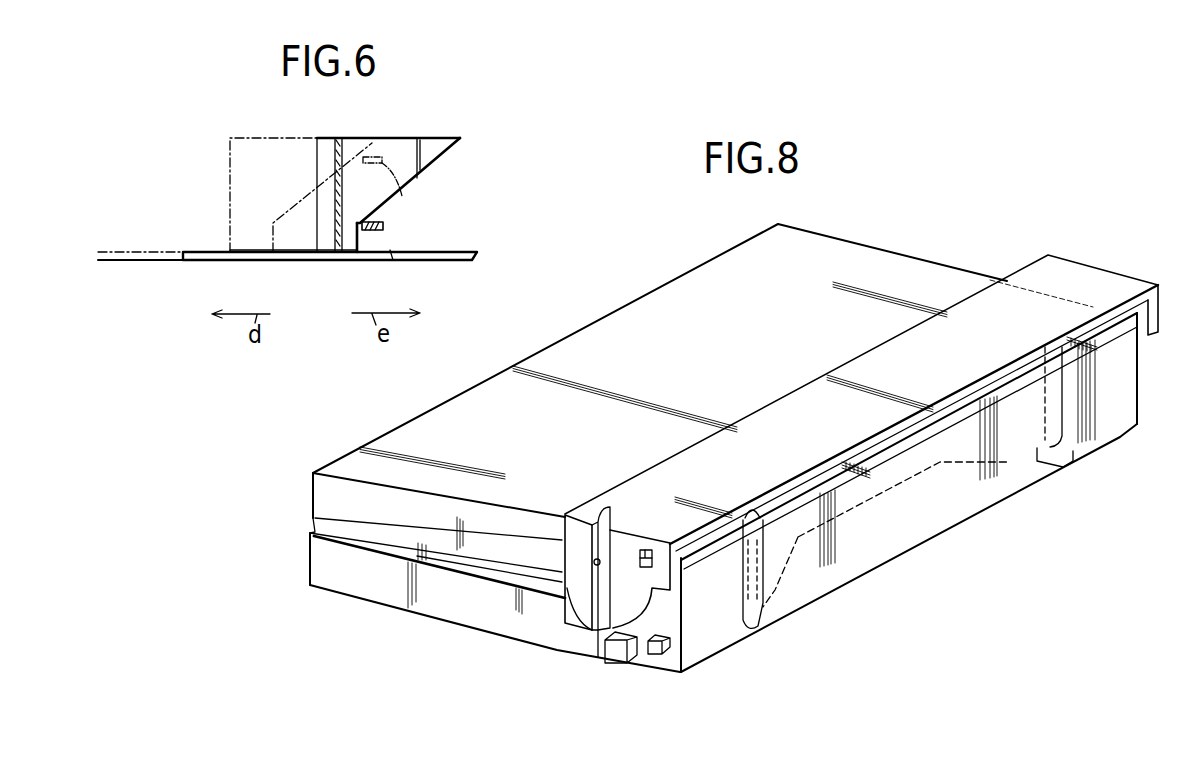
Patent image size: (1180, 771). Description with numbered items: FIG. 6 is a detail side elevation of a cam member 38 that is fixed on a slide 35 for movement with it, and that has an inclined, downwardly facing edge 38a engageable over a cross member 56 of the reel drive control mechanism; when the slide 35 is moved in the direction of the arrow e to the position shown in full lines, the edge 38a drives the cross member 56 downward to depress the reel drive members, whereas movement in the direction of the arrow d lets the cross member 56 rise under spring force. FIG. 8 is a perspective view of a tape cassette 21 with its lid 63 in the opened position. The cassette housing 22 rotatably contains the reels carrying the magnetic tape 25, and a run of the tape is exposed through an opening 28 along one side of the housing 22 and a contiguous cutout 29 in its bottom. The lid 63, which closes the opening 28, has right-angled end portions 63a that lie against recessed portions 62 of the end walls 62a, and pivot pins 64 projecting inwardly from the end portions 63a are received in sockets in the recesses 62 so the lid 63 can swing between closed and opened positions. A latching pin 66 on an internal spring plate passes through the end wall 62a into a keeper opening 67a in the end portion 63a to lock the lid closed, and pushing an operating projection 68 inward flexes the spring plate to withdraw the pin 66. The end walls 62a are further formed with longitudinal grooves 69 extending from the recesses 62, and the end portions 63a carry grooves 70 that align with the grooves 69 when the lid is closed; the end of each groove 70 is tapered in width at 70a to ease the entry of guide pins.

In FIG. 8, the tape cassette 21 is at (862, 228).
In FIG. 8, the housing 22 is at (966, 510).
In FIG. 8, the magnetic tape 25 is at (877, 532).
In FIG. 8, the opening 28 is at (745, 618).
In FIG. 8, the opening or cutout 29 is at (798, 540).
In FIG. 6, the slide 35 is at (363, 253).
In FIG. 6, the cam member 38 is at (312, 140).
In FIG. 6, the inclined downwardly facing edge 38a is at (423, 173).
In FIG. 6, the cross member 56 is at (382, 227).
In FIG. 8, the recessed portions 62 is at (665, 625).
In FIG. 8, the end walls 62a is at (467, 612).
In FIG. 8, the lid 63 is at (787, 417).
In FIG. 8, the right-angled end portions 63a is at (577, 530).
In FIG. 8, the pivot pins 64 is at (587, 610).
In FIG. 8, the latching pin 66 is at (658, 656).
In FIG. 8, the keeper or opening 67a is at (643, 550).
In FIG. 8, the operating projection 68 is at (617, 655).
In FIG. 8, the longitudinal grooves 69 is at (400, 540).
In FIG. 8, the grooves 70 is at (594, 562).
In FIG. 8, the tapered end 70a is at (597, 527).